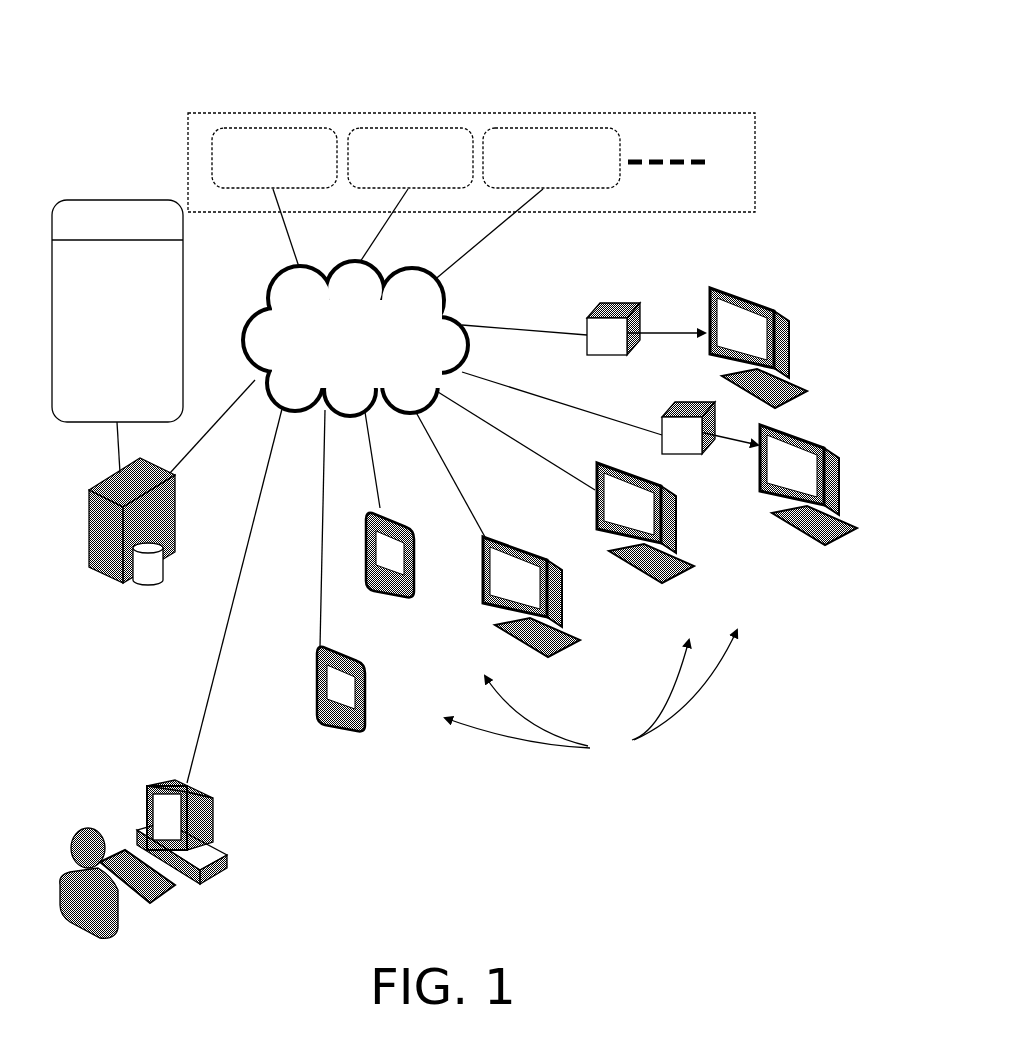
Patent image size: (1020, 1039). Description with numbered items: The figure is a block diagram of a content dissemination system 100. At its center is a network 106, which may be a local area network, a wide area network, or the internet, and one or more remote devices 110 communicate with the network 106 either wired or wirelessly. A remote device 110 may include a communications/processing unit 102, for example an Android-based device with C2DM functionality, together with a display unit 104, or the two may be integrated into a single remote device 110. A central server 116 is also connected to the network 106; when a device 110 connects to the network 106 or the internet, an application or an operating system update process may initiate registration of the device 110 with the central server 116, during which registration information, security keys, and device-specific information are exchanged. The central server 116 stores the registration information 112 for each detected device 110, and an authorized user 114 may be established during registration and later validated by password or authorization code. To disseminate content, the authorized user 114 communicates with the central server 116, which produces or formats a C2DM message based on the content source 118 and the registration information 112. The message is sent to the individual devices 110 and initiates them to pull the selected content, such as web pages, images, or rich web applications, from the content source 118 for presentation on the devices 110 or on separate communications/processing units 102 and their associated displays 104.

The content dissemination system 100 is at (412, 58).
The communications/processing unit 102 is at (603, 303).
The display unit 104 is at (748, 292).
The network 106 is at (343, 316).
The remote devices 110 is at (591, 697).
The registration information 112 is at (117, 200).
The authorized user 114 is at (85, 830).
The central server 116 is at (178, 538).
The content source 118 is at (728, 140).